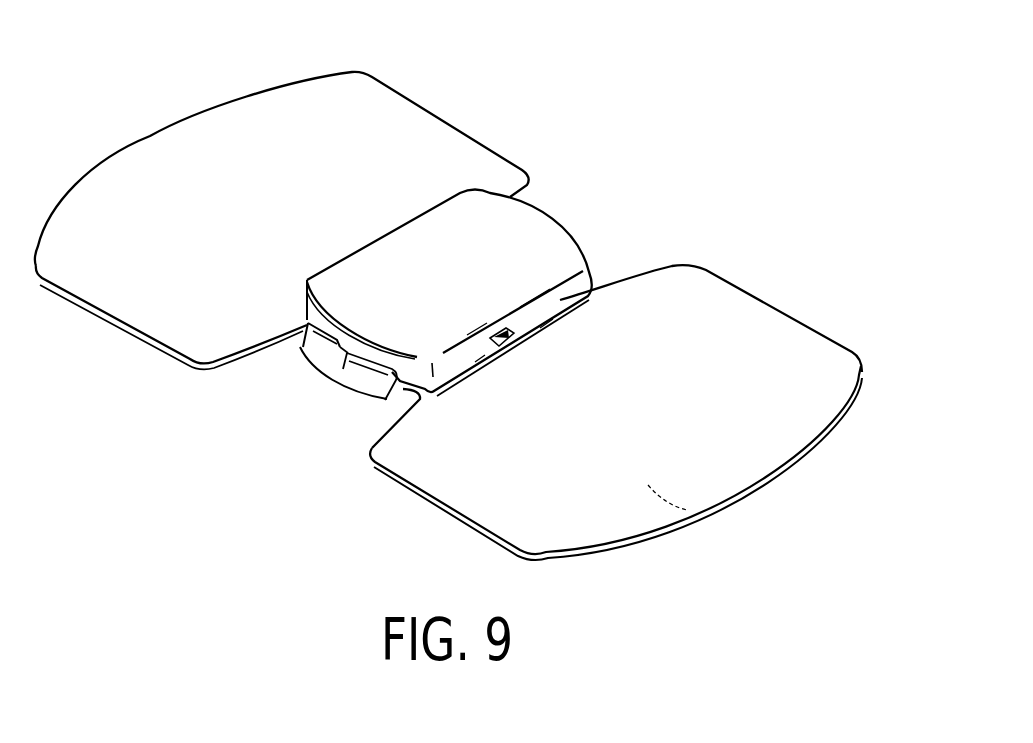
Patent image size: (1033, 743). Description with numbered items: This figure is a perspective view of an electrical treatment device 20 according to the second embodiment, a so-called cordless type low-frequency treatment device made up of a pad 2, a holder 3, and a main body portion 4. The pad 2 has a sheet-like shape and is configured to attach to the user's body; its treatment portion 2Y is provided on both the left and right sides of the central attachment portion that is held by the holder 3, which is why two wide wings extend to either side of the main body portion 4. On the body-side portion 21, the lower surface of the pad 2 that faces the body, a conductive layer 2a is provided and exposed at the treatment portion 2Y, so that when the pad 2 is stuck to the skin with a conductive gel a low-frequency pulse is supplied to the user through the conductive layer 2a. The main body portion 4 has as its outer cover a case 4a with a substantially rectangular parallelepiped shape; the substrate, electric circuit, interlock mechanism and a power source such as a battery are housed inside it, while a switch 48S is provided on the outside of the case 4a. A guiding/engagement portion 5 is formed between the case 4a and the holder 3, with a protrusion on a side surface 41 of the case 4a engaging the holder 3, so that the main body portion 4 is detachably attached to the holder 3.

The electrical treatment device 20 is at (558, 100).
The pad 2 is at (710, 270).
The treatment portion 2Y is at (193, 138).
The body-side portion 21 is at (615, 460).
The conductive layer 2a is at (750, 528).
The main body portion 4 is at (553, 218).
The case 4a is at (478, 269).
The switch 48S is at (515, 346).
The holder 3 is at (318, 353).
The guiding/engagement portion 5 is at (341, 351).
The side surface 41 is at (383, 358).